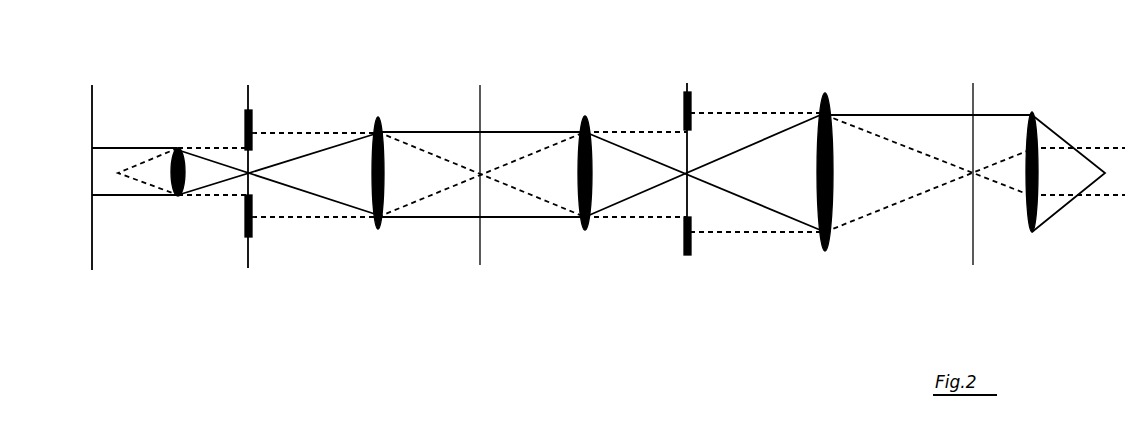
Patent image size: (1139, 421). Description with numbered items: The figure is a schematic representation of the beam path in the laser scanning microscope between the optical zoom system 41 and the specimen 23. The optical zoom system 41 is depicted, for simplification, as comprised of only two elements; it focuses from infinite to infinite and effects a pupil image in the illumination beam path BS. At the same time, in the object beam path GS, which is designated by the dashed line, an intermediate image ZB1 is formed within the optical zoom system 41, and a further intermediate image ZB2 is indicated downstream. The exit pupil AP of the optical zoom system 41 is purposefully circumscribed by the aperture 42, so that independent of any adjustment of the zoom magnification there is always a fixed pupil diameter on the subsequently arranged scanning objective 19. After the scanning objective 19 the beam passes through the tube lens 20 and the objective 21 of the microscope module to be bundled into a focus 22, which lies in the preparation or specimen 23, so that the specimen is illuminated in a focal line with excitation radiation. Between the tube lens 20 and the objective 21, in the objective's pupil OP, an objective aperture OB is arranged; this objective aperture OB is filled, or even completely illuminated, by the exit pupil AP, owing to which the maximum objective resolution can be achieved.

The scanning objective 19 is at (585, 230).
The tube lens 20 is at (378, 228).
The objective 21 is at (176, 197).
The focus 22 is at (108, 162).
The specimen 23 is at (92, 100).
The optical zoom system 41 is at (1022, 273).
The aperture 42 is at (685, 258).
The objective aperture OB is at (252, 237).
The objective's pupil OP is at (248, 178).
The second intermediate image plane ZB2 is at (480, 265).
The intermediate image ZB1 is at (975, 262).
The exit pupil AP is at (683, 202).
The object beam path GS is at (745, 235).
The illumination beam path BS is at (792, 217).